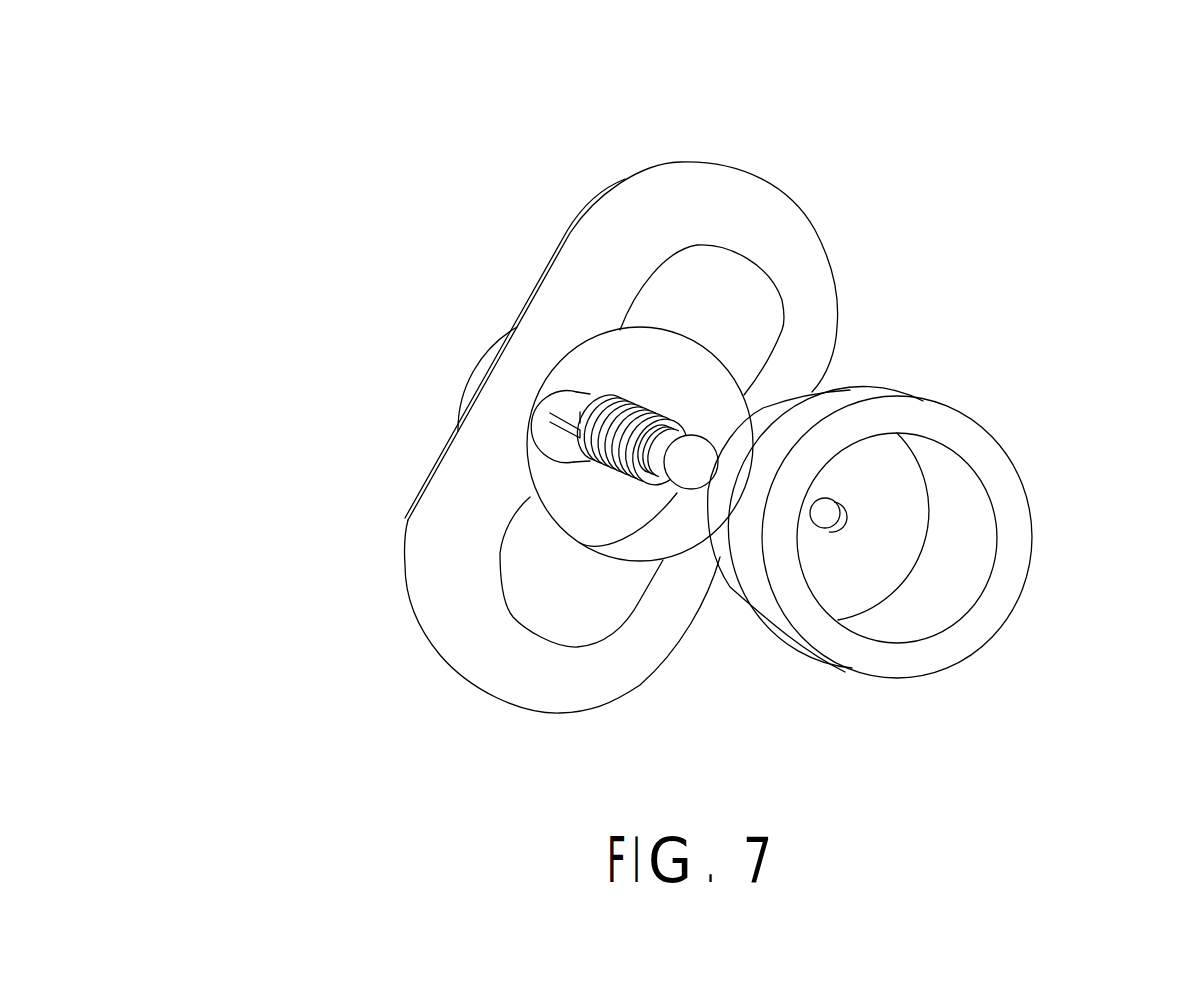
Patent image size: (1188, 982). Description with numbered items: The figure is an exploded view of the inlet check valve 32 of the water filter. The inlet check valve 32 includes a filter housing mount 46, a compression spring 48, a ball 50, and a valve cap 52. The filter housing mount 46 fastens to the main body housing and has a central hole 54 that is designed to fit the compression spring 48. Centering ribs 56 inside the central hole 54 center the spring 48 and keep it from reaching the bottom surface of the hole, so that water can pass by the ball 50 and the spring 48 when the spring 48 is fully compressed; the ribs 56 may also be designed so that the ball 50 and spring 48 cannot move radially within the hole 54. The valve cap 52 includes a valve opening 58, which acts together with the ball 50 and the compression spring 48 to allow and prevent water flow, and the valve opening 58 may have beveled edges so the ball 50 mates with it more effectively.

The inlet check valve 32 is at (314, 632).
The filter housing mount 46 is at (812, 348).
The compression spring 48 is at (652, 415).
The ball 50 is at (712, 440).
The valve cap 52 is at (1013, 558).
The central hole 54 is at (473, 329).
The centering ribs 56 is at (584, 410).
The valve opening 58 is at (827, 512).